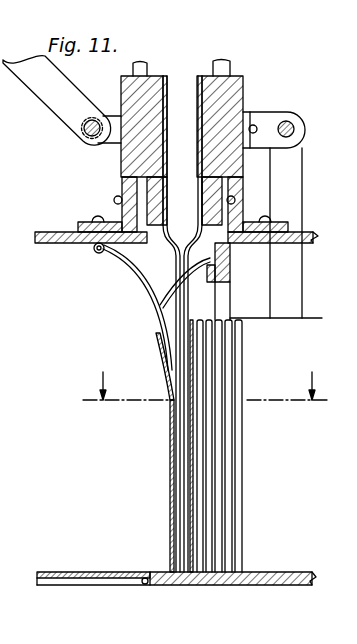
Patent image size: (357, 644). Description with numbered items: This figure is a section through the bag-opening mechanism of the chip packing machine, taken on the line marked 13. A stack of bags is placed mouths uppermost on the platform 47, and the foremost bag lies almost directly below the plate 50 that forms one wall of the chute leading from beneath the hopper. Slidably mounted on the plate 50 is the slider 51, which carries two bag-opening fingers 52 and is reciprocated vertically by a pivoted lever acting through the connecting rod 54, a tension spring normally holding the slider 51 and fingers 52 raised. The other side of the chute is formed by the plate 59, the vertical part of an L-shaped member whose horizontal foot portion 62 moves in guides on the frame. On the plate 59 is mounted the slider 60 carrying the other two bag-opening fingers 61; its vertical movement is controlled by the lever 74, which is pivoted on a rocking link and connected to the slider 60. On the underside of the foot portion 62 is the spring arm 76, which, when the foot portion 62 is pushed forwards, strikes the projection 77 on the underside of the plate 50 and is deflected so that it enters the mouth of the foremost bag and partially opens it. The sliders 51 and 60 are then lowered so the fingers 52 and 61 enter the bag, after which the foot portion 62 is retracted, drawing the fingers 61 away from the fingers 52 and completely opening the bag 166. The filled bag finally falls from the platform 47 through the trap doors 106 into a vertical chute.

The section line 13- 13 is at (205, 374).
The platform 47 is at (276, 580).
The plate 50 is at (222, 62).
The slider 51 is at (234, 104).
The bag-opening fingers 52 is at (172, 322).
The connecting rod 54 is at (275, 233).
The plate 59 is at (147, 72).
The slider 60 is at (136, 102).
The bag-opening fingers 61 is at (176, 264).
The foot portion 62 is at (46, 236).
The lever 74 is at (78, 118).
The spring arm 76 is at (125, 268).
The projection 77 is at (217, 268).
The trap doors 106 is at (95, 556).
The bag 166 is at (172, 462).